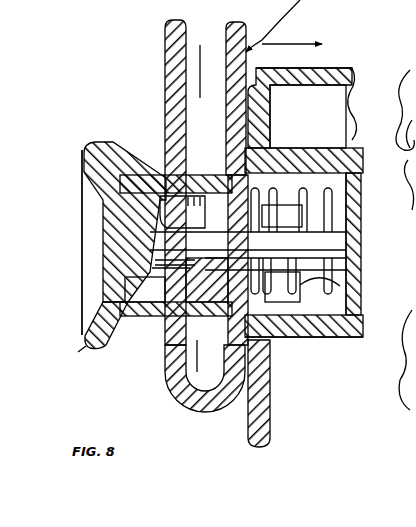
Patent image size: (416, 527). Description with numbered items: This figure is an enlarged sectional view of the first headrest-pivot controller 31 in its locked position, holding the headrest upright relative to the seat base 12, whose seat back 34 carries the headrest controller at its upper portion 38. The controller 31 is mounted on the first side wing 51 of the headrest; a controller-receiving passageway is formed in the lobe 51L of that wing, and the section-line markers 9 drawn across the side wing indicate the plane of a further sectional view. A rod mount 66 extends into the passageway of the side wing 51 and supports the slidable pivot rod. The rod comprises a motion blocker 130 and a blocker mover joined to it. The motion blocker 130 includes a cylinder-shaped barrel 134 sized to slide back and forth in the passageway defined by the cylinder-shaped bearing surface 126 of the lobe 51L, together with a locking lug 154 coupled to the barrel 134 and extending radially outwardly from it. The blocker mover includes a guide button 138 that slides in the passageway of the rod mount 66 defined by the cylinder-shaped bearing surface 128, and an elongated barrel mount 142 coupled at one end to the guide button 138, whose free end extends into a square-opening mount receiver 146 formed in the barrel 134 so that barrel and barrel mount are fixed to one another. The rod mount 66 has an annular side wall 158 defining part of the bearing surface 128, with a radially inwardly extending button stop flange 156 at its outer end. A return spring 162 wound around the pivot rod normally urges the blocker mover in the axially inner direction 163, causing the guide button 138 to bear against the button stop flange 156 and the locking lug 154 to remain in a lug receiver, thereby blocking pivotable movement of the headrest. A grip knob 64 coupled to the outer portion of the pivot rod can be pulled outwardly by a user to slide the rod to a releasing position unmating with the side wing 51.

The section line 9- 9 is at (212, 61).
The seat base 12 is at (338, 62).
The first headrest-pivot controller 31 is at (70, 140).
The seat back 34 is at (352, 126).
The upper portion 38 is at (360, 78).
The first side wing 51 is at (163, 110).
The lobe 51L is at (178, 384).
The grip knob 64 is at (76, 348).
The rod mount 66 is at (301, 350).
The cylinder-shaped bearing surface 126 is at (160, 306).
The cylinder-shaped bearing surface 128 is at (330, 336).
The motion blocker 130 is at (92, 305).
The cylinder-shaped barrel 134 is at (106, 221).
The guide button 138 is at (352, 200).
The elongated barrel mount 142 is at (224, 250).
The mount receiver 146 is at (318, 236).
The locking lug 154 is at (172, 176).
The button stop flange 156 is at (340, 292).
The annular side wall 158 is at (297, 152).
The return spring 162 is at (342, 290).
The axially inner direction 163 is at (276, 42).